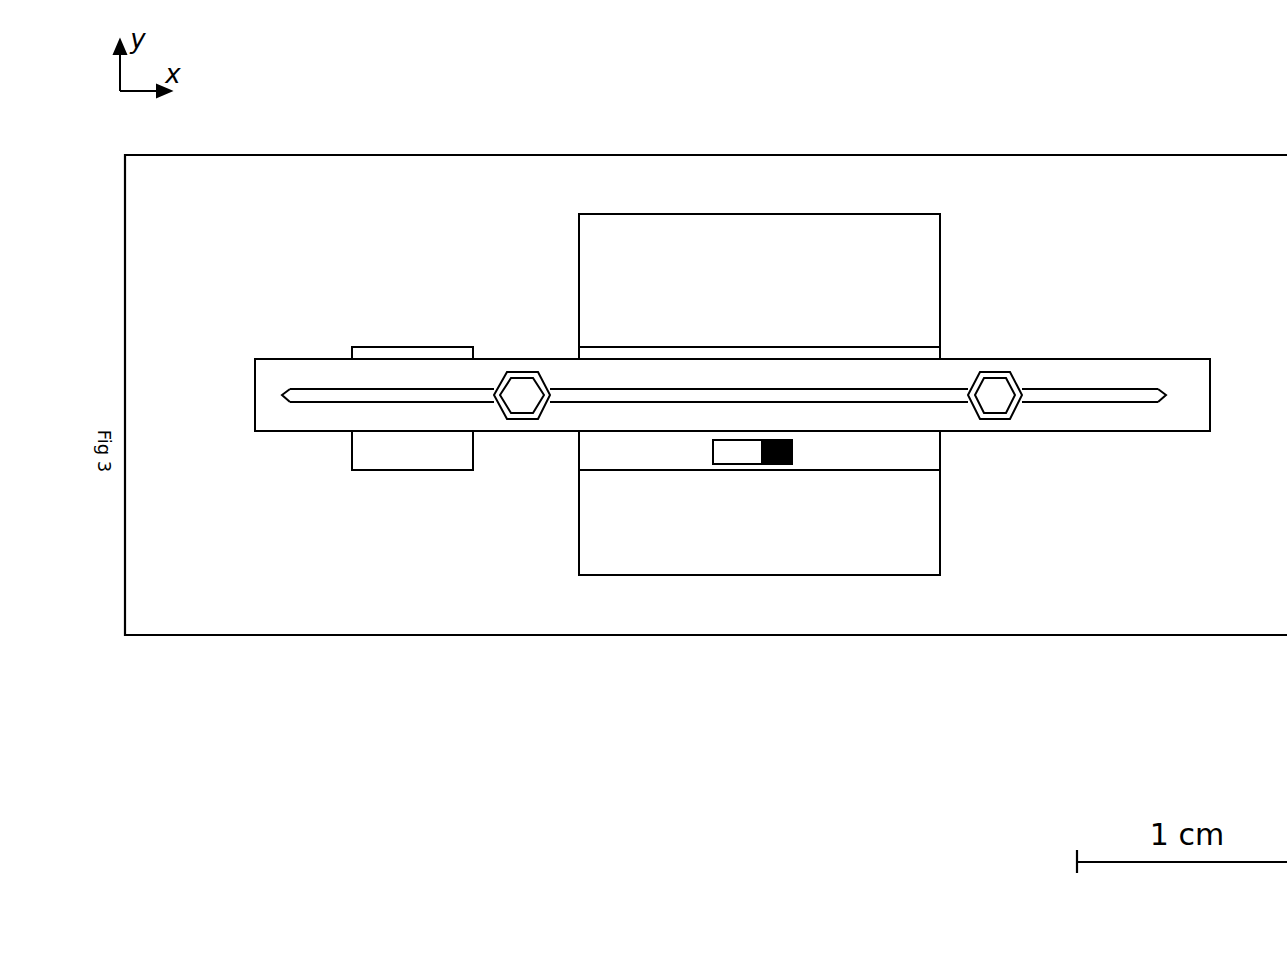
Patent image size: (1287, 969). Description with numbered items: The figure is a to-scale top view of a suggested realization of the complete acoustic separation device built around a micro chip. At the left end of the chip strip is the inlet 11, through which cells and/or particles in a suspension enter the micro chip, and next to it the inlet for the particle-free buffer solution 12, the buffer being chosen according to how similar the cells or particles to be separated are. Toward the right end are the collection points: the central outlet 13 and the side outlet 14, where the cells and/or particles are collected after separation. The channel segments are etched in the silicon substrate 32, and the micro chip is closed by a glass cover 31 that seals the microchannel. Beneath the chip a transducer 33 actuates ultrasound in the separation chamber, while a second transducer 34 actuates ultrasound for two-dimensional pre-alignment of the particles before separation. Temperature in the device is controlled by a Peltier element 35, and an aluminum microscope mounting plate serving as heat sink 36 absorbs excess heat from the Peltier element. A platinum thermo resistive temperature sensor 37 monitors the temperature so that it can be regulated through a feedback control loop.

The inlet 11 is at (302, 396).
The inlet for particle-free buffer solution 12 is at (520, 398).
The central outlet 13 is at (997, 397).
The side outlet 14 is at (1142, 396).
The glass cover 31 is at (267, 378).
The silicon substrate 32 is at (260, 385).
The transducer 33 is at (920, 353).
The second transducer 34 is at (400, 352).
The Peltier element 35 is at (926, 276).
The aluminum microscope mounting plate/heat sink 36 is at (1196, 596).
The PT-100 thermo resistive temperature sensor 37 is at (737, 453).